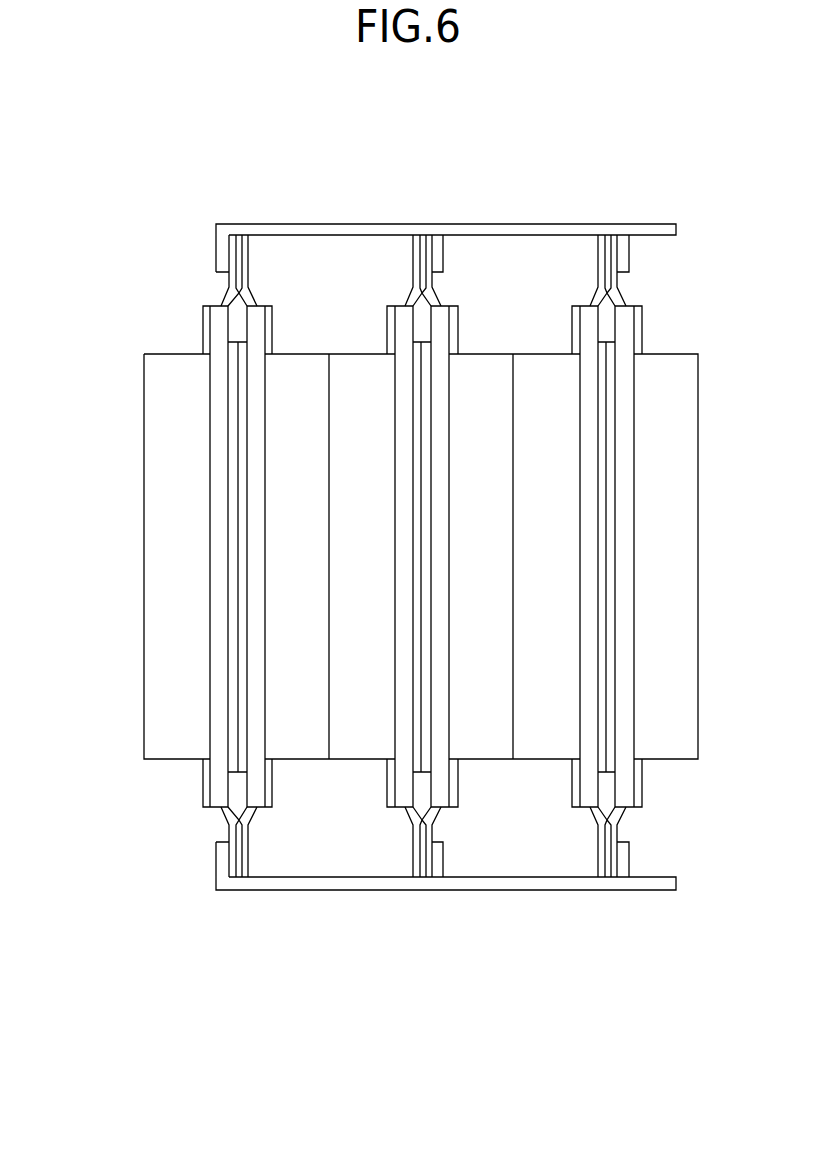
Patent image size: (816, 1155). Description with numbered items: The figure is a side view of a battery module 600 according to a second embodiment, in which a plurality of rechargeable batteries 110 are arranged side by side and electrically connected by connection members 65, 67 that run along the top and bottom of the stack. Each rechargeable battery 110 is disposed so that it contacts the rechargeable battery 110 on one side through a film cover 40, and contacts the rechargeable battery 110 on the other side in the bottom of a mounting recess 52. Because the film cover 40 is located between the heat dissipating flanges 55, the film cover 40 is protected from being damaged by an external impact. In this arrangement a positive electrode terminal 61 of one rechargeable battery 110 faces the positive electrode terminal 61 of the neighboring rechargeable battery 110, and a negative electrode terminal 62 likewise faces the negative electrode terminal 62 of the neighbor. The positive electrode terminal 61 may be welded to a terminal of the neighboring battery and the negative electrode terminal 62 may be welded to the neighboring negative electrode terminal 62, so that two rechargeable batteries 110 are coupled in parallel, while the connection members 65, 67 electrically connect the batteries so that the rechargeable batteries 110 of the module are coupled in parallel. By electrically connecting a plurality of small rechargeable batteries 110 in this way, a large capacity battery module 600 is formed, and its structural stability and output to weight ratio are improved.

The battery module 600 is at (441, 144).
The rechargeable battery 110 is at (136, 689).
The mounting recess 52 is at (144, 580).
The heat dissipating flange 55 is at (203, 326).
The film cover 40 is at (240, 536).
The positive electrode terminal 61 is at (247, 265).
The negative electrode terminal 62 is at (226, 809).
The connection member 65 is at (528, 224).
The connection member 67 is at (527, 890).